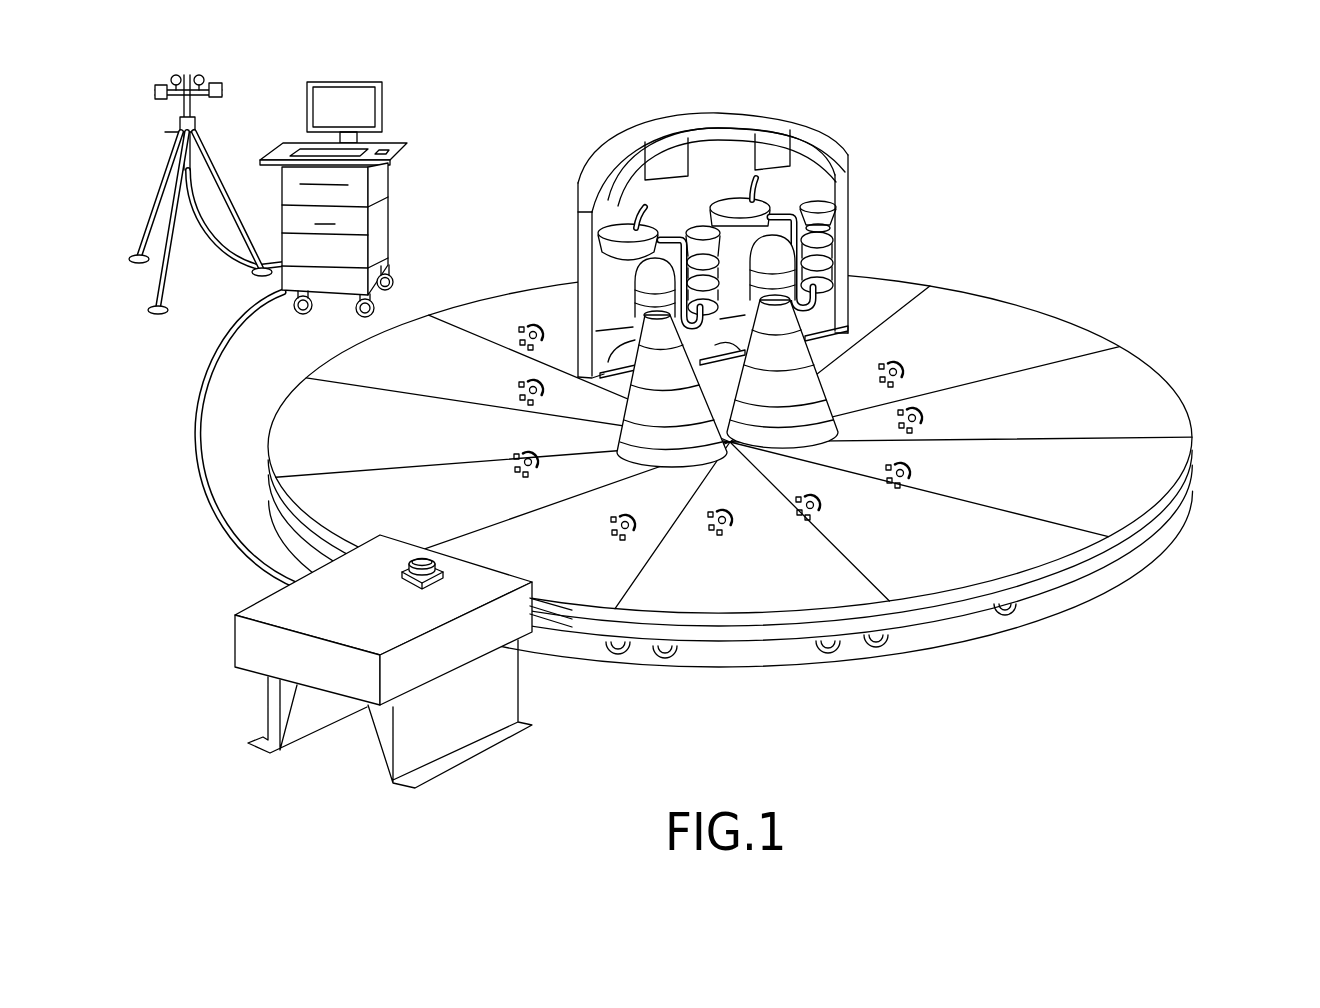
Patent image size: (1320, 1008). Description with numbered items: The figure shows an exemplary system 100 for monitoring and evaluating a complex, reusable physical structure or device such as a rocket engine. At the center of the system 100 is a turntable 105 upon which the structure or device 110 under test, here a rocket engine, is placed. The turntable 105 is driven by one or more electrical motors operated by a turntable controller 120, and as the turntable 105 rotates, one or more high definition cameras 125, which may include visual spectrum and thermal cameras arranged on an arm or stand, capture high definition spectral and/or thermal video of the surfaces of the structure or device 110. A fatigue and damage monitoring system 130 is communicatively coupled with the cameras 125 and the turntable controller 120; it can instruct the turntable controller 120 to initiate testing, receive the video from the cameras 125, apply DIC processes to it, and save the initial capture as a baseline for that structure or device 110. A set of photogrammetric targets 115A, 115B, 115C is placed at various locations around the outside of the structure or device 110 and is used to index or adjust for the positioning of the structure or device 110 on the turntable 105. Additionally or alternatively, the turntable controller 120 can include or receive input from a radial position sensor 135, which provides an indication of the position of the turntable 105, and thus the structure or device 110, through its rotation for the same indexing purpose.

The system 100 is at (1230, 212).
The turntable 105 is at (1177, 452).
The structure or device under test 110 is at (823, 198).
The photogrammetric target 115A is at (928, 409).
The photogrammetric target 115B is at (916, 472).
The photogrammetric target 115C is at (824, 506).
The turntable controller 120 is at (246, 646).
The high definition cameras 125 is at (158, 91).
The fatigue and damage monitoring system 130 is at (402, 149).
The radial position sensor 135 is at (438, 569).